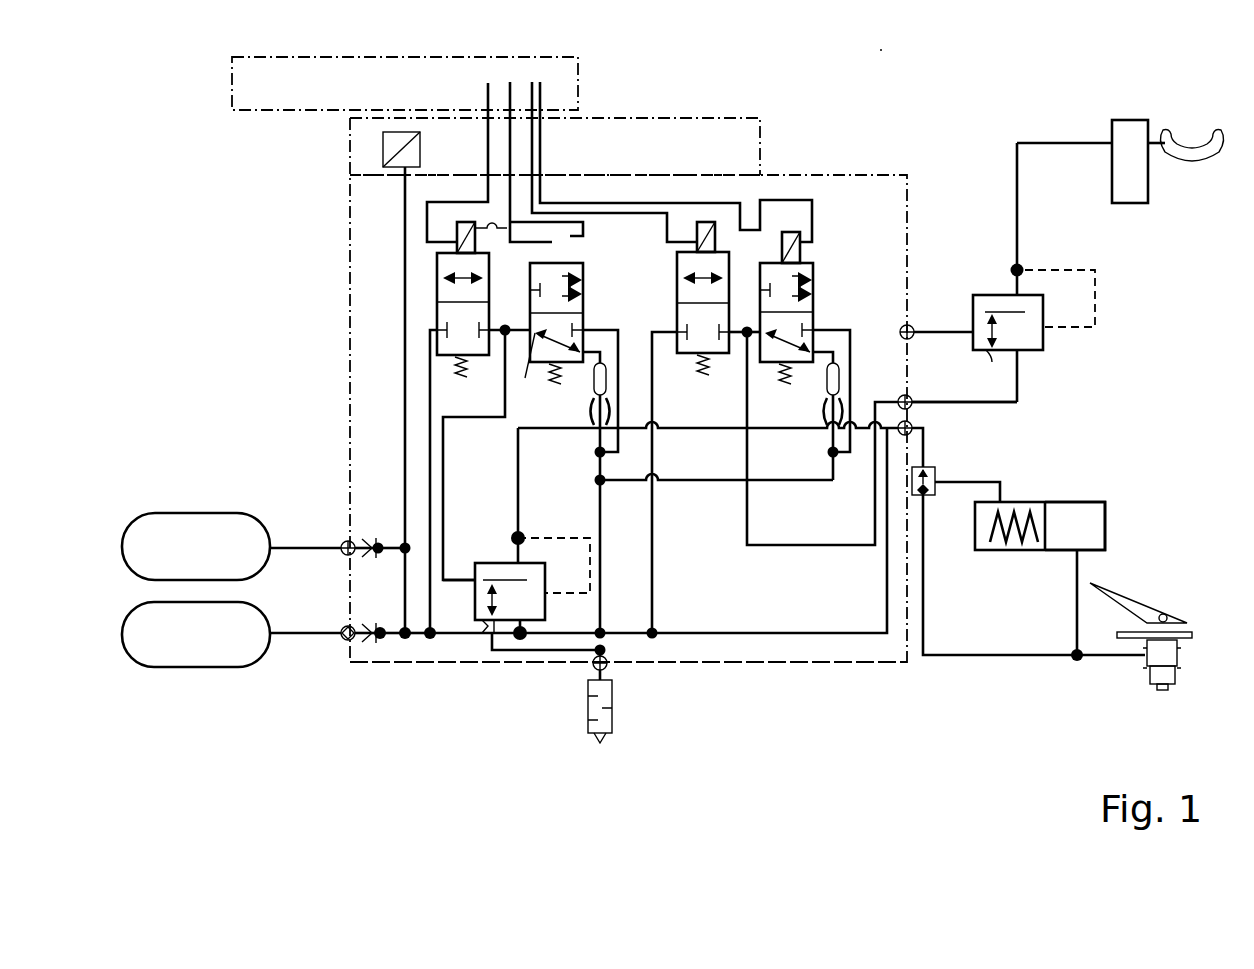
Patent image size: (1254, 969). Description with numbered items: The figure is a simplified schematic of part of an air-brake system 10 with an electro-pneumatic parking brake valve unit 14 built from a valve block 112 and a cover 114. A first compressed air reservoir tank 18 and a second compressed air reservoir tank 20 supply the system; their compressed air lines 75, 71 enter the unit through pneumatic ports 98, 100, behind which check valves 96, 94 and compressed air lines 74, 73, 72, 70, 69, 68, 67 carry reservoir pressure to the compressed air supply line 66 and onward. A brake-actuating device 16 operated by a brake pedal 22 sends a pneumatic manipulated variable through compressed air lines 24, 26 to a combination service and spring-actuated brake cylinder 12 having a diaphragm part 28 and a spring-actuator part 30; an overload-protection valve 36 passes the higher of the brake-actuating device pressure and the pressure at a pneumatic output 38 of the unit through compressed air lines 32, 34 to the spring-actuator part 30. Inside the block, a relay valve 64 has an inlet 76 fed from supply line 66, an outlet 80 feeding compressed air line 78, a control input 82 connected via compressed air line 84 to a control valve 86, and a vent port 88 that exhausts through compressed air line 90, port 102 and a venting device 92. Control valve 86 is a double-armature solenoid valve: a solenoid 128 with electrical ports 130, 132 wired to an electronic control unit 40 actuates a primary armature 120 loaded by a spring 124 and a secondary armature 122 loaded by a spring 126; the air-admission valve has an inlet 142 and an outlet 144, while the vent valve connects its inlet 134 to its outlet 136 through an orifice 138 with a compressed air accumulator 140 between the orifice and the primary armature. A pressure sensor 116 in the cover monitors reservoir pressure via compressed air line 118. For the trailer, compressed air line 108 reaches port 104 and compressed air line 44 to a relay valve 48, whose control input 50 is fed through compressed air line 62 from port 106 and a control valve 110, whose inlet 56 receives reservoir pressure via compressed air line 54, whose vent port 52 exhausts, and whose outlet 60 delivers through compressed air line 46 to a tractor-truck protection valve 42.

The air-brake system 10 is at (884, 48).
The combination service and spring-actuated brake cylinder 12 is at (1057, 520).
The parking brake valve unit 14 is at (776, 172).
The brake-actuating device 16 is at (1189, 628).
The first compressed air reservoir tank 18 is at (156, 514).
The second compressed air reservoir tank 20 is at (168, 660).
The brake pedal 22 is at (1154, 600).
The compressed air line 24 is at (1074, 658).
The compressed air line 26 is at (1086, 566).
The diaphragm part 28 is at (1105, 516).
The spring-actuator part 30 is at (986, 540).
The compressed air line 32 is at (998, 482).
The compressed air line 34 is at (935, 460).
The overload-protection valve 36 is at (924, 498).
The pneumatic output 38 is at (917, 426).
The electronic control unit 40 is at (300, 60).
The tractor-truck protection valve 42 is at (1158, 112).
The compressed air line 44 is at (944, 402).
The compressed air line 46 is at (1017, 212).
The relay valve 48 is at (1010, 270).
The control input 50 is at (970, 306).
The vent port 52 is at (994, 360).
The compressed air line 54 is at (1021, 394).
The inlet 56 is at (1023, 362).
The outlet 60 is at (1028, 288).
The compressed air line 62 is at (918, 330).
The relay valve 64 is at (510, 575).
The compressed air supply line 66 is at (528, 630).
The compressed air line 67 is at (460, 638).
The compressed air line 68 is at (412, 638).
The compressed air line 69 is at (394, 644).
The compressed air line 70 is at (366, 644).
The compressed air line 71 is at (300, 636).
The compressed air line 72 is at (418, 580).
The compressed air line 73 is at (403, 542).
The compressed air line 74 is at (370, 542).
The compressed air line 75 is at (292, 549).
The inlet 76 is at (516, 638).
The compressed air line 78 is at (518, 494).
The outlet 80 is at (522, 544).
The control input 82 is at (472, 580).
The compressed air line 84 is at (444, 480).
The control valve 86 is at (488, 280).
The vent port 88 is at (480, 626).
The compressed air line 90 is at (544, 654).
The venting device 92 is at (612, 710).
The check valve 94 is at (382, 628).
The check valve 96 is at (380, 552).
The pneumatic port 98 is at (342, 536).
The pneumatic port 100 is at (346, 642).
The pneumatic port 102 is at (608, 666).
The pneumatic port 104 is at (906, 396).
The pneumatic port 106 is at (902, 326).
The compressed air line 108 is at (770, 632).
The control valve 110 is at (732, 284).
The valve block 112 is at (800, 664).
The cover 114 is at (689, 118).
The pressure sensor 116 is at (420, 148).
The compressed air line 118 is at (404, 424).
The primary armature 120 is at (583, 283).
The secondary armature 122 is at (437, 278).
The spring 124 is at (542, 386).
The spring 126 is at (464, 371).
The solenoid 128 is at (507, 230).
The electrical port 130 is at (484, 104).
The electrical port 132 is at (510, 84).
The inlet 134 is at (534, 342).
The outlet 136 is at (600, 458).
The orifice 138 is at (586, 428).
The compressed air accumulator 140 is at (590, 406).
The inlet 142 is at (431, 326).
The outlet 144 is at (506, 322).